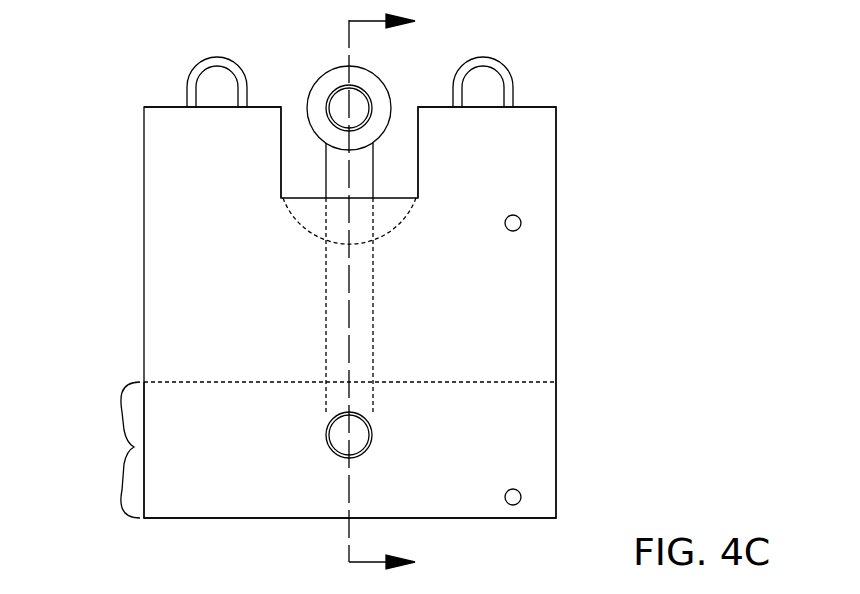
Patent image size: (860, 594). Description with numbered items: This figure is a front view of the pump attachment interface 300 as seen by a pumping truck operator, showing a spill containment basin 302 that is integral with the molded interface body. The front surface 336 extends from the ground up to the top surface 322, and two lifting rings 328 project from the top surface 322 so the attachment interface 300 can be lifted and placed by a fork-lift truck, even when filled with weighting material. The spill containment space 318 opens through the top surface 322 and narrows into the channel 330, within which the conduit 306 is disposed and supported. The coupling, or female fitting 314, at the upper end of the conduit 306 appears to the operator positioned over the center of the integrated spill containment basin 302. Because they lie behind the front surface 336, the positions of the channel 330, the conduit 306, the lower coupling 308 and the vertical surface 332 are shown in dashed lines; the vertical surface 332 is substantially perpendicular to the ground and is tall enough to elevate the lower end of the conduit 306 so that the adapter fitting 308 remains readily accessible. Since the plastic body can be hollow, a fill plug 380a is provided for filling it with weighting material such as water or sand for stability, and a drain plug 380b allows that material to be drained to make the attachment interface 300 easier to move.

The pump attachment interface 300 is at (103, 92).
The spill containment basin 302 is at (317, 225).
The conduit 306 is at (340, 317).
The adapter fitting 308 is at (333, 453).
The female fitting 314 is at (372, 76).
The spill containment space 318 is at (292, 167).
The top surface 322 is at (537, 107).
The lifting rings 328 is at (216, 57).
The channel 330 is at (375, 348).
The vertical surface 332 is at (132, 447).
The front surface 336 is at (507, 358).
The fill plug 380a is at (522, 222).
The drain plug 380b is at (522, 495).